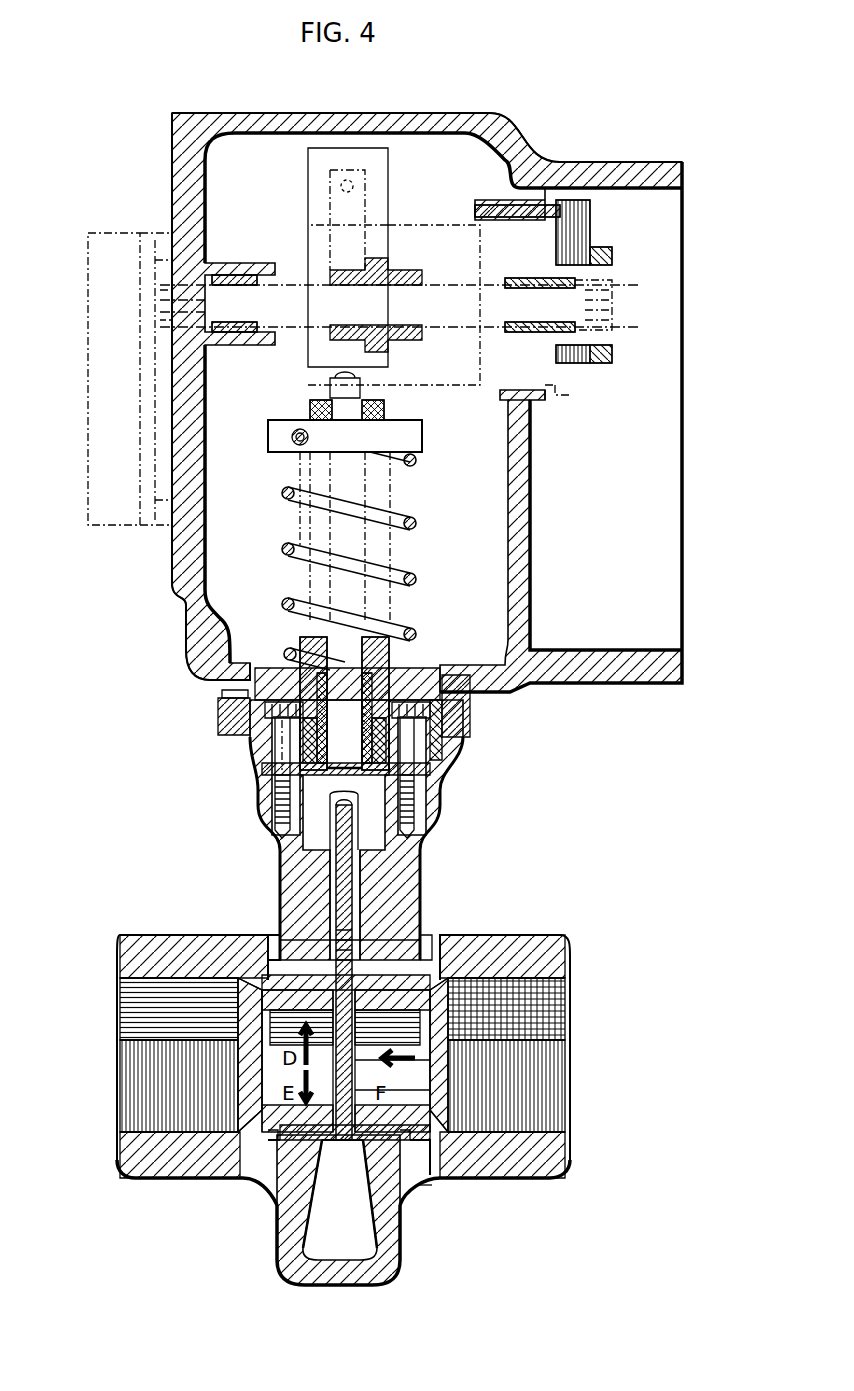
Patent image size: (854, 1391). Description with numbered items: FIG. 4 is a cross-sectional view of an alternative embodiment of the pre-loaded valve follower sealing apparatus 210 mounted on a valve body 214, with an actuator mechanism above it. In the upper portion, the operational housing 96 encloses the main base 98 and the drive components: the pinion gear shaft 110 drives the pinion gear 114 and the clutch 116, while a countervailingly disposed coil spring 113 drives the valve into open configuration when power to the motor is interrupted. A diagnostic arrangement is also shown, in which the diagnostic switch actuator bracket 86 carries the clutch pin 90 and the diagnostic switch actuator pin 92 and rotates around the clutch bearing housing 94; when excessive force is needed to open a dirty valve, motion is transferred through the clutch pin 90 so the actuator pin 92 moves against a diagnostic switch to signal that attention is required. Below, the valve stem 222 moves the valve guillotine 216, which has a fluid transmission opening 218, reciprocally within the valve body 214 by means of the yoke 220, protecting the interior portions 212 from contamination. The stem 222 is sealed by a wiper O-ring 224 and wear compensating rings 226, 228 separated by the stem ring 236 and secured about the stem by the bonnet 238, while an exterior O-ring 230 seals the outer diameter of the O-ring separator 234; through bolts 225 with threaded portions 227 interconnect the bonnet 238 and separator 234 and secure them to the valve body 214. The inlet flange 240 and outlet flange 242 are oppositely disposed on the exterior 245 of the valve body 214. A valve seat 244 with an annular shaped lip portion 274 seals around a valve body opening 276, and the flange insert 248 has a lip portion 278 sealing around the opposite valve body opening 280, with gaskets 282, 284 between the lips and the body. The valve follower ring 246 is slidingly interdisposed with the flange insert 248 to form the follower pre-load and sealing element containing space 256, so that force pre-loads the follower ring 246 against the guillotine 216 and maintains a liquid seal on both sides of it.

The diagnostic switch actuator bracket 86 is at (592, 228).
The clutch pin 90 is at (545, 200).
The diagnostic switch actuator pin 92 is at (615, 303).
The clutch bearing housing 94 is at (570, 395).
The operational housing 96 is at (190, 120).
The main base 98 is at (178, 572).
The pinion gear shaft 110 is at (288, 295).
The coil spring 113 is at (412, 512).
The pinion gear 114 is at (392, 272).
The clutch 116 is at (470, 278).
The pre-loaded valve follower sealing apparatus 210 is at (527, 899).
The interior portions 212 is at (370, 898).
The valve body 214 is at (410, 902).
The valve guillotine 216 is at (342, 1140).
The fluid transmission opening 218 is at (350, 882).
The yoke 220 is at (258, 840).
The valve stem 222 is at (350, 665).
The wiper O-ring 224 is at (320, 790).
The through bolts 225 is at (462, 737).
The wear compensating ring 226 is at (310, 740).
The threaded portions 227 is at (462, 778).
The wear compensating ring 228 is at (300, 680).
The exterior O-ring 230 is at (272, 722).
The O-ring separator 234 is at (290, 752).
The stem ring 236 is at (467, 707).
The bonnet 238 is at (308, 658).
The inlet flange 240 is at (128, 1160).
The outlet flange 242 is at (537, 1165).
The valve seat 244 is at (565, 1005).
The exterior 245 is at (375, 1226).
The valve follower ring 246 is at (400, 962).
The flange insert 248 is at (380, 1128).
The follower pre-load and sealing element containing space 256 is at (412, 1188).
The annular shaped lip portion 274 is at (272, 960).
The valve body opening 276 is at (265, 1140).
The annular shaped lip portion 278 is at (455, 1132).
The valve body opening 280 is at (432, 1030).
The gasket 282 is at (268, 1030).
The gasket 284 is at (440, 1185).